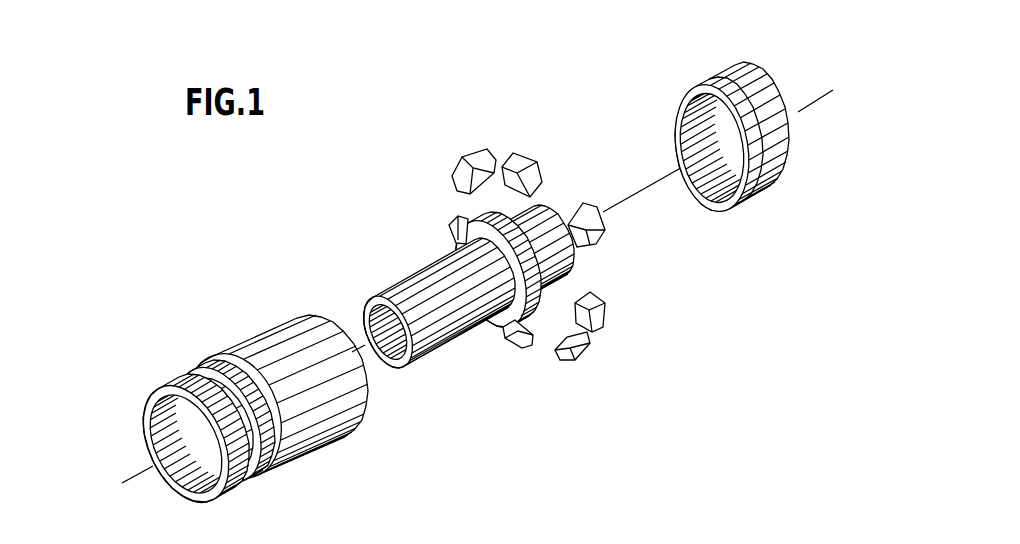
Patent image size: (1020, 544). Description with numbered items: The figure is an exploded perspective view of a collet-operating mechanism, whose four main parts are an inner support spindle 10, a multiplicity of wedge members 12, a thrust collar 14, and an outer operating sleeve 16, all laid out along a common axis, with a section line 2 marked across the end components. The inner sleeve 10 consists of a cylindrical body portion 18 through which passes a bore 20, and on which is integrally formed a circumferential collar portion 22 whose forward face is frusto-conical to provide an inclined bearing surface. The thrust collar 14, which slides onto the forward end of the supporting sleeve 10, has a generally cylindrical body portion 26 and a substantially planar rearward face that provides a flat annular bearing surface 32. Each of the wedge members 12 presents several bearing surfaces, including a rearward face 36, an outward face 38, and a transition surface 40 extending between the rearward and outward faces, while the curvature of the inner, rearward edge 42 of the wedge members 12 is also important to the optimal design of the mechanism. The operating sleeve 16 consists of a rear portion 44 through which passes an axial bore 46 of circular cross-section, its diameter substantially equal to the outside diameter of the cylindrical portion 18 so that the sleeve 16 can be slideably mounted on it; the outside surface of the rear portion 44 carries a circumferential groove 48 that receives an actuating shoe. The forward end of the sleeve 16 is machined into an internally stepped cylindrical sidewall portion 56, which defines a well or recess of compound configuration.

The section line 2- 2 is at (133, 480).
The inner support spindle 10 is at (473, 300).
The wedge members 12 is at (551, 249).
The thrust collar 14 is at (747, 136).
The outer operating sleeve 16 is at (232, 401).
The cylindrical body portion 18 is at (491, 300).
The bore 20 is at (366, 322).
The circumferential collar portion 22 is at (553, 300).
The cylindrical body portion 26 is at (757, 102).
The annular bearing surface 32 is at (724, 198).
The rearward face 36 is at (514, 186).
The outward face 38 is at (604, 226).
The transition surface 40 is at (541, 163).
The inner, rearward edge 42 is at (526, 198).
The rear portion 44 is at (280, 473).
The axial bore 46 is at (148, 428).
The circumferential groove 48 is at (243, 492).
The internally stepped cylindrical sidewall portion 56 is at (298, 312).